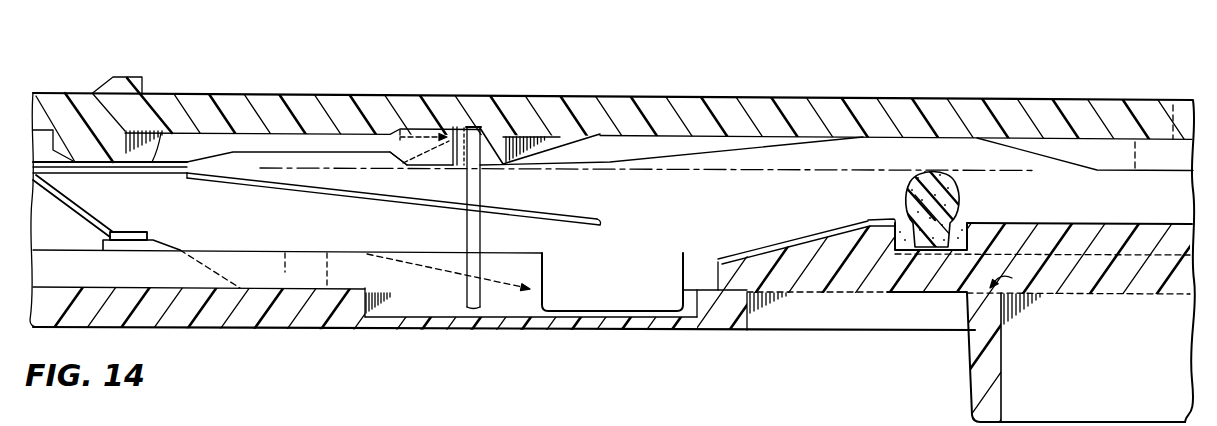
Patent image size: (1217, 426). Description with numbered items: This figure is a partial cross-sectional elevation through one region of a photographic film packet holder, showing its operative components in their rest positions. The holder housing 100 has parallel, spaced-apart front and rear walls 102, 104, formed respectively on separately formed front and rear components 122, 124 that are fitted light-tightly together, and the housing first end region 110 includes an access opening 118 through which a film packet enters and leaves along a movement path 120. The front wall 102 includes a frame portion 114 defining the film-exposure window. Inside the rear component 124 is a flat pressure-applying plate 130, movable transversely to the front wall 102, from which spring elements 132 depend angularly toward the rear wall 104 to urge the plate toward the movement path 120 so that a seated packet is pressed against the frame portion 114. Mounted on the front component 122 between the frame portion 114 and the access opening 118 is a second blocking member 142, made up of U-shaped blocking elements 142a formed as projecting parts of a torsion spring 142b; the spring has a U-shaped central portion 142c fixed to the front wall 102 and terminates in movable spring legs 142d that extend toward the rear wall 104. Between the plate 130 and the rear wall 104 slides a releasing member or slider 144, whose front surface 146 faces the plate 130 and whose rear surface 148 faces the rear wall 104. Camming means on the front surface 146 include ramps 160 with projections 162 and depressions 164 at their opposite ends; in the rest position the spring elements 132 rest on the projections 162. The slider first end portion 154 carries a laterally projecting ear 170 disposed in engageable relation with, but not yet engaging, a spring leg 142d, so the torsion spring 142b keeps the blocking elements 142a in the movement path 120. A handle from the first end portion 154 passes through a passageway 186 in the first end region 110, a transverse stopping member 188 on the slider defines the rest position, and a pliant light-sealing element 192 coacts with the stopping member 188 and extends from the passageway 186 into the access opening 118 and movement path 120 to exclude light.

The housing 100 is at (797, 75).
The front wall 102 is at (645, 96).
The rear wall 104 is at (612, 330).
The first end region 110 is at (903, 99).
The frame portion 114 is at (63, 93).
The access opening 118 is at (1178, 193).
The movement path 120 is at (765, 172).
The front component 122 is at (312, 88).
The rear component 124 is at (335, 343).
The pressure-applying plate 130 is at (172, 108).
The spring elements 132 is at (85, 199).
The second blocking member 142 is at (453, 108).
The U-shaped blocking elements 142a is at (392, 164).
The torsion spring 142b is at (488, 126).
The U-shaped central portion 142c is at (406, 126).
The spring legs 142d is at (481, 262).
The slider 144 is at (342, 250).
The front surface 146 is at (73, 248).
The rear surface 148 is at (82, 285).
The first end portion 154 is at (650, 252).
The ramps 160 is at (181, 248).
The projections 162 is at (155, 239).
The depressions 164 is at (287, 252).
The ear 170 is at (532, 322).
The passageway 186 is at (1032, 304).
The stopping member 188 is at (893, 216).
The light-sealing element 192 is at (955, 196).